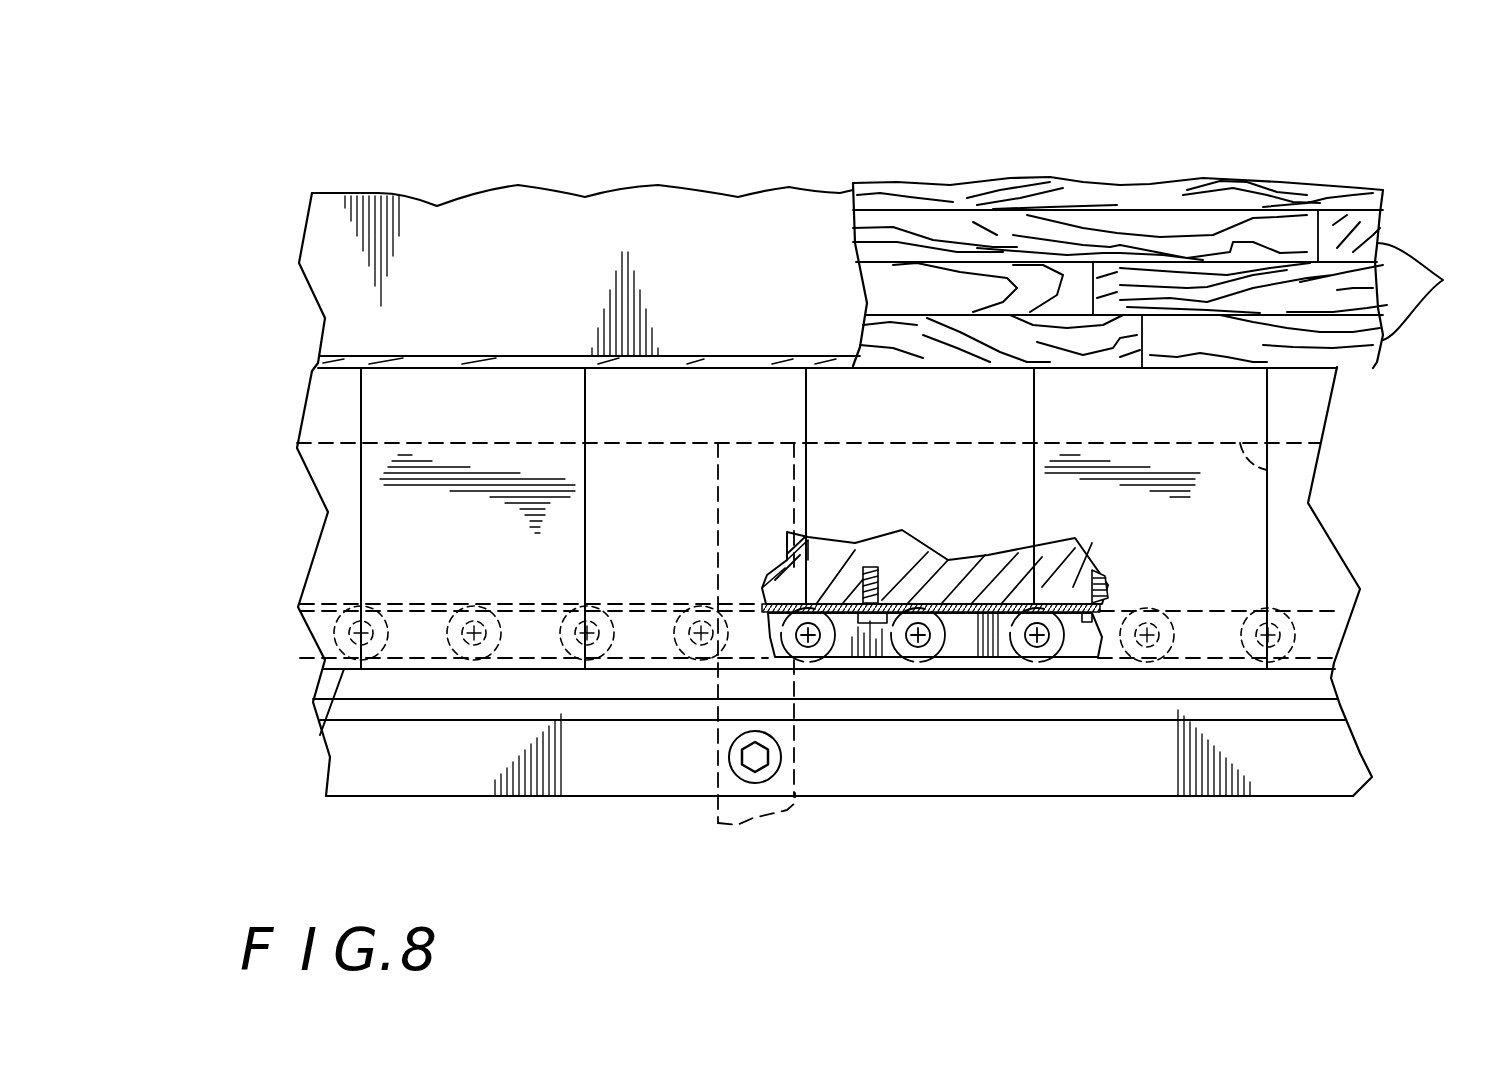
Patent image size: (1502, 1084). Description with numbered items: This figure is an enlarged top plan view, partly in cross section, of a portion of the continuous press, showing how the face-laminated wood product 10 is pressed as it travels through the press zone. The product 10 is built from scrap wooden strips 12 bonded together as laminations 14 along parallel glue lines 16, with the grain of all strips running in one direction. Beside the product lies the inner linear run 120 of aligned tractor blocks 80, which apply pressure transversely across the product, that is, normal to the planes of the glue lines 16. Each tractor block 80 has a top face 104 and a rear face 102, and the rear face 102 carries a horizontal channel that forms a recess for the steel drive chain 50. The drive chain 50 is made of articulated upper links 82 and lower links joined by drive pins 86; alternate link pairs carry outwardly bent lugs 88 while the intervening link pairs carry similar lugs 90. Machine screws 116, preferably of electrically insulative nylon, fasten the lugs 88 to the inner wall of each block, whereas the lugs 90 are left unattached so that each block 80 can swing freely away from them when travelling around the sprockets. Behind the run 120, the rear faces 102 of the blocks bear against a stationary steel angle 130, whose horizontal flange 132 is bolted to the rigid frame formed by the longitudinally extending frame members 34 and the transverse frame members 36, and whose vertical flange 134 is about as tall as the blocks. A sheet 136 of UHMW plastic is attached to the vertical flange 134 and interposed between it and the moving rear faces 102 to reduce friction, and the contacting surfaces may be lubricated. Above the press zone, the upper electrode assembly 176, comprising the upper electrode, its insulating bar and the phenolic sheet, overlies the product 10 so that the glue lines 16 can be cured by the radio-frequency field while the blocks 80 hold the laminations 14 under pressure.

The face-laminated wood product 10 is at (1243, 150).
The wooden strips 12 is at (953, 287).
The laminations 14 is at (1443, 280).
The glue lines 16 is at (1080, 272).
The longitudinally extending frame members 34 is at (1280, 475).
The transverse frame members 36 is at (795, 740).
The drive chain 50 is at (1002, 682).
The tractor blocks 80 is at (443, 397).
The upper links 82 is at (945, 660).
The drive pins 86 is at (1052, 625).
The lugs 88 is at (835, 600).
The lugs 90 is at (1005, 582).
The rear face 102 is at (323, 730).
The top face 104 is at (530, 404).
The machine screws 116 is at (880, 575).
The inner linear run 120 is at (296, 513).
The stationary steel angle 130 is at (1275, 800).
The horizontal flange 132 is at (1335, 752).
The vertical flange 134 is at (1338, 708).
The sheet of UHMW plastic 136 is at (1330, 680).
The upper electrode assembly 176 is at (668, 160).